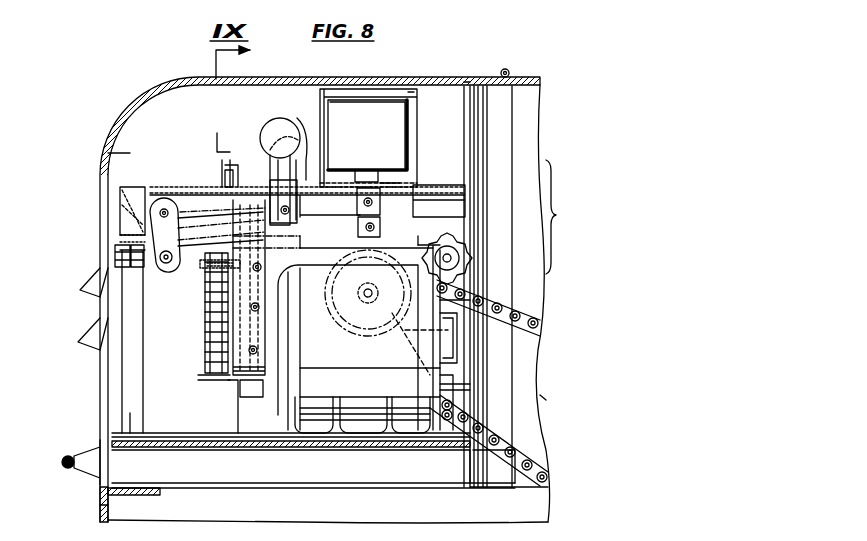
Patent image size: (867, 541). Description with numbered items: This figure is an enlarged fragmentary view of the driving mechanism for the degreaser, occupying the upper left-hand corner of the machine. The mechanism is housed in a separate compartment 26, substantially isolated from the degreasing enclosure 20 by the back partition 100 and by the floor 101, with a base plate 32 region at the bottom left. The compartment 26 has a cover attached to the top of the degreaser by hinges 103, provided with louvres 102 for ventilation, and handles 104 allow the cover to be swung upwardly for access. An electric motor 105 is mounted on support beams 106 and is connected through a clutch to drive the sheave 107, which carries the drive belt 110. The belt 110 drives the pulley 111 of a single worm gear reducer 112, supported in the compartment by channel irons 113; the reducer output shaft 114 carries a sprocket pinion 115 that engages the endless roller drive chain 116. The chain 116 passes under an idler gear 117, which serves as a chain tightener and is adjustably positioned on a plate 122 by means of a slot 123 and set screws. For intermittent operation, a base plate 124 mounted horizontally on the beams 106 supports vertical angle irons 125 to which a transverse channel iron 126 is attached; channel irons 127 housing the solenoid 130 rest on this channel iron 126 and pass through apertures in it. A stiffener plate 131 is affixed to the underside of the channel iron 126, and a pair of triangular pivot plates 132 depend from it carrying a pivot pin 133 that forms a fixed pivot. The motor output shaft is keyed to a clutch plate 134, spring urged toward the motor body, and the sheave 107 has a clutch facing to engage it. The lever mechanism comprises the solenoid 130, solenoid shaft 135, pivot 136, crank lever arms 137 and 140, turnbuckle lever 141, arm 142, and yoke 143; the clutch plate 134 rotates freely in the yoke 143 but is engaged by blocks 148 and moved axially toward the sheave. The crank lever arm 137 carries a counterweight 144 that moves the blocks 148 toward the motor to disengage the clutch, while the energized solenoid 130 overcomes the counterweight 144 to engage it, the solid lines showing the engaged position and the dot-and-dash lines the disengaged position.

The degreasing enclosure 20 is at (564, 217).
The compartment 26 is at (377, 70).
The base plate 32 is at (100, 510).
The back partition 100 is at (478, 127).
The floor 101 is at (281, 489).
The louvres 102 is at (97, 287).
The hinges 103 is at (507, 69).
The handles 104 is at (78, 462).
The electric motor 105 is at (359, 333).
The support beams 106 is at (291, 455).
The sheave 107 is at (205, 372).
The drive belt 110 is at (217, 152).
The pulley 111 is at (238, 175).
The worm gear reducer 112 is at (302, 127).
The channel irons 113 is at (211, 396).
The output shaft 114 is at (386, 312).
The sprocket pinion 115 is at (362, 399).
The roller drive chain 116 is at (540, 400).
The idler gear 117 is at (480, 267).
The plate 122 is at (467, 80).
The slot 123 is at (447, 233).
The base plate 124 is at (213, 428).
The vertical angle irons 125 is at (135, 412).
The transverse channel iron 126 is at (183, 184).
The channel irons 127 is at (413, 107).
The solenoid 130 is at (368, 138).
The stiffener plate 131 is at (244, 174).
The triangular pivot plates 132 is at (237, 283).
The pivot pin 133 is at (259, 306).
The clutch plate 134 is at (252, 375).
The solenoid shaft 135 is at (387, 183).
The pivot 136 is at (372, 203).
The crank lever arm 137 is at (307, 201).
The crank lever arm 140 is at (168, 243).
The turnbuckle lever 141 is at (207, 270).
The arm 142 is at (201, 306).
The yoke 143 is at (258, 312).
The counterweight 144 is at (268, 130).
The blocks 148 is at (242, 406).